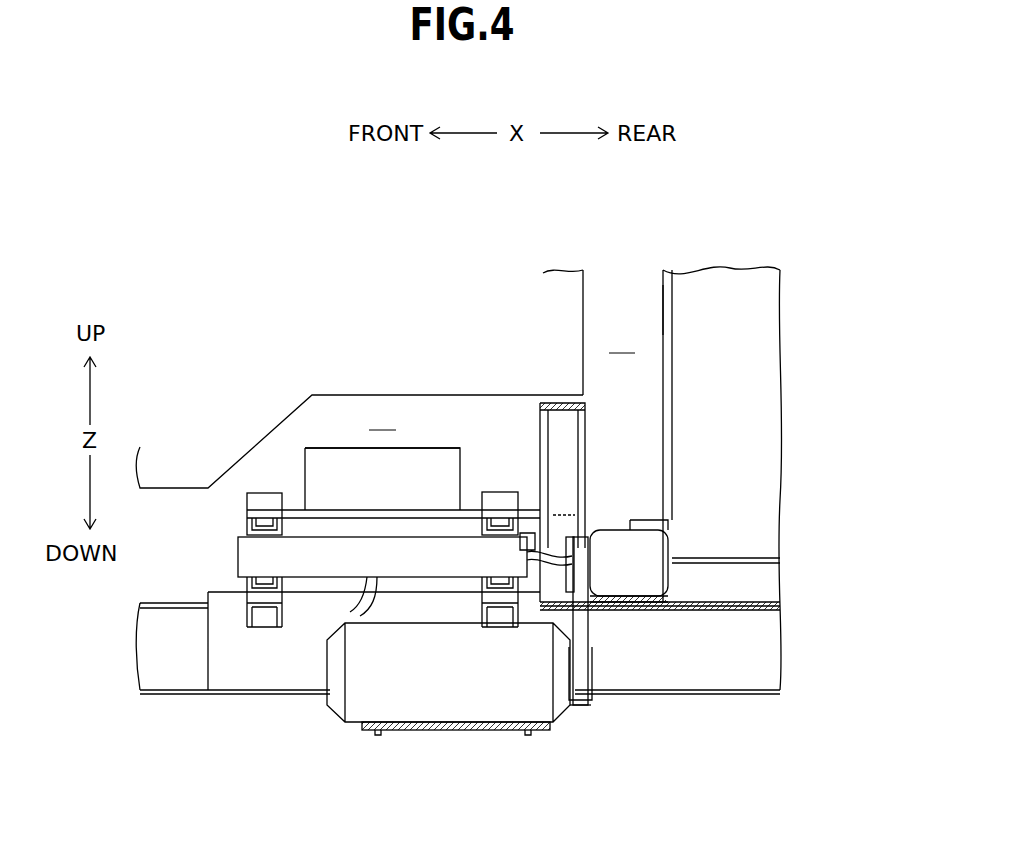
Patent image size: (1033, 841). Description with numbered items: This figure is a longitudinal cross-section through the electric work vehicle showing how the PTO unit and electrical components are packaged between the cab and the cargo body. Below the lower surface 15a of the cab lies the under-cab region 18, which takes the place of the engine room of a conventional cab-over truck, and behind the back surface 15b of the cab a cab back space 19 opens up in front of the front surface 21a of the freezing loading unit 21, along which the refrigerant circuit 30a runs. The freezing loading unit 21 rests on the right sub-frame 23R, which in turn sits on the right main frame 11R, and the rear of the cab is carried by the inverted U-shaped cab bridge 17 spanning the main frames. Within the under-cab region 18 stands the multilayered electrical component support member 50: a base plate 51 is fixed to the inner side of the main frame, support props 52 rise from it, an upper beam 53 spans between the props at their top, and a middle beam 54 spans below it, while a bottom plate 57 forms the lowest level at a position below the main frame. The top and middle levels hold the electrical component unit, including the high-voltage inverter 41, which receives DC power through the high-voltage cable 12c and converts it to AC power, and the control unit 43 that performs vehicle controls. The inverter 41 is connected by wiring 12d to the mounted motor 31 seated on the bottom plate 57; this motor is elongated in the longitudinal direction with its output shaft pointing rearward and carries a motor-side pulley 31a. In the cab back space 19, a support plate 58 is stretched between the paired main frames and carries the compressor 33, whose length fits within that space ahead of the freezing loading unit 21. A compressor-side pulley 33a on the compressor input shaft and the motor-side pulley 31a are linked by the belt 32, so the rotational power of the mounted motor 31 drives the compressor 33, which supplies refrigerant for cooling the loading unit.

The freezing loading unit 21 is at (738, 295).
The front surface of the freezing loading unit 21a is at (662, 297).
The refrigerant circuit 30a is at (662, 323).
The back surface of the cab 15b is at (583, 298).
The lower surface of the cab 15a is at (355, 405).
The cab back space 19 is at (623, 343).
The cab bridge 17 is at (590, 448).
The control unit 43 is at (430, 448).
The electrical component support member 50 is at (282, 458).
The support prop 52 is at (263, 490).
The under-cab region 18 is at (382, 459).
The high-voltage cable 12c is at (535, 547).
The compressor-side pulley 33a is at (562, 551).
The compressor 33 is at (658, 557).
The upper beam 53 is at (247, 520).
The high-voltage inverter 41 is at (238, 553).
The middle beam 54 is at (247, 583).
The right sub-frame 23R is at (762, 583).
The right main frame 11R is at (762, 657).
The base plate 51 is at (252, 672).
The wiring 12d is at (345, 612).
The bottom plate 57 is at (402, 730).
The mounted motor 31 is at (465, 705).
The belt 32 is at (583, 712).
The motor-side pulley 31a is at (595, 685).
The support plate 58 is at (652, 612).